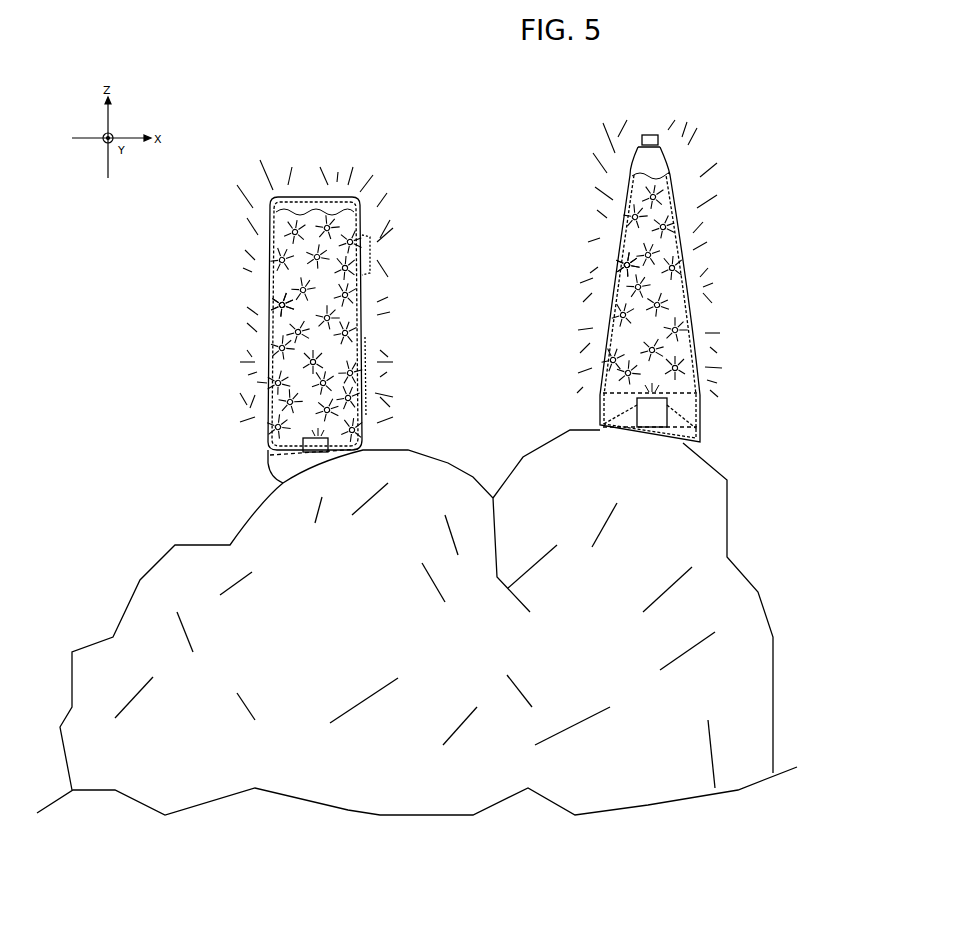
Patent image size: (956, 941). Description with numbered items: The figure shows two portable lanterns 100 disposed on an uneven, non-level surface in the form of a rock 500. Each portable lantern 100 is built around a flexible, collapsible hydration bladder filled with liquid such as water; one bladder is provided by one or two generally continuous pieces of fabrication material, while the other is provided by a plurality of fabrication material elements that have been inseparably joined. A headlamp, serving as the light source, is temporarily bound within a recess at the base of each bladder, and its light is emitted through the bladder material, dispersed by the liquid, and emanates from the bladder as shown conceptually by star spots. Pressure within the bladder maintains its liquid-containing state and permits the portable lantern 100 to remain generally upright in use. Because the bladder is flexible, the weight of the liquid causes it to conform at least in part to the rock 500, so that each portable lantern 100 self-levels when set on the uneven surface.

The portable lantern 100 is at (538, 137).
The rock 500 is at (742, 567).